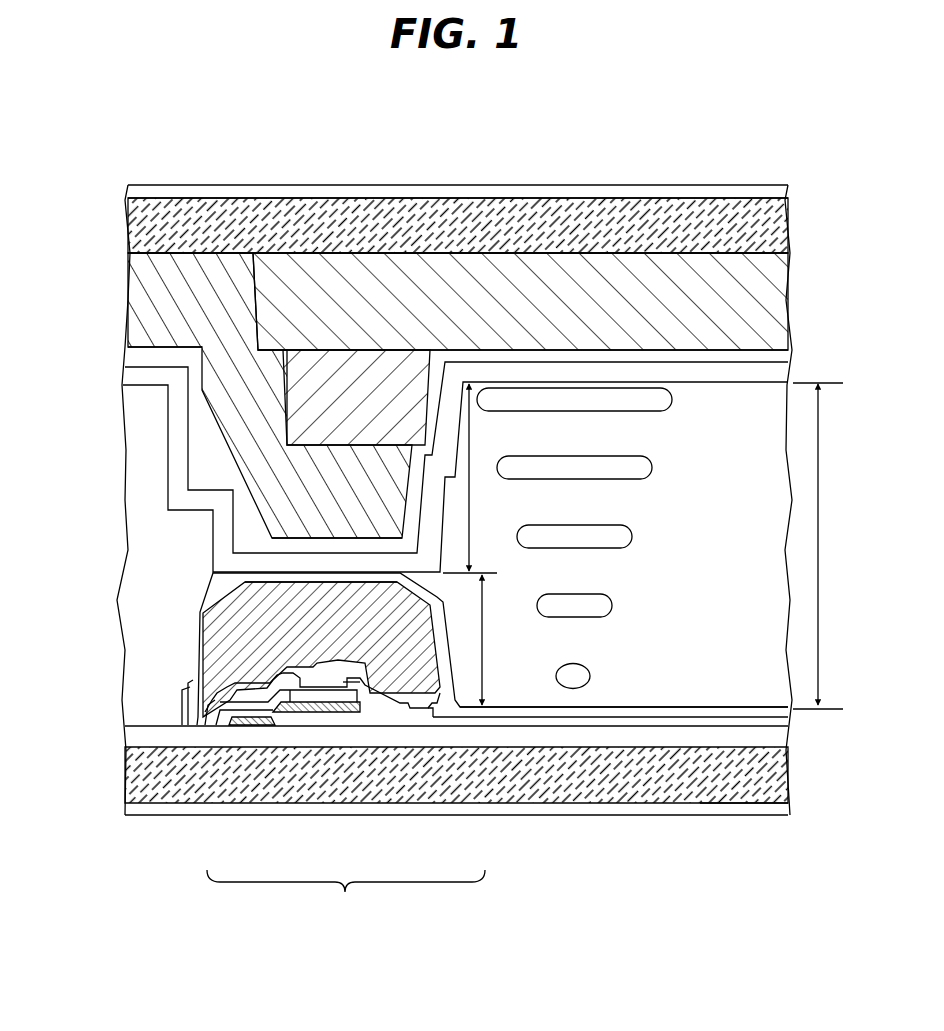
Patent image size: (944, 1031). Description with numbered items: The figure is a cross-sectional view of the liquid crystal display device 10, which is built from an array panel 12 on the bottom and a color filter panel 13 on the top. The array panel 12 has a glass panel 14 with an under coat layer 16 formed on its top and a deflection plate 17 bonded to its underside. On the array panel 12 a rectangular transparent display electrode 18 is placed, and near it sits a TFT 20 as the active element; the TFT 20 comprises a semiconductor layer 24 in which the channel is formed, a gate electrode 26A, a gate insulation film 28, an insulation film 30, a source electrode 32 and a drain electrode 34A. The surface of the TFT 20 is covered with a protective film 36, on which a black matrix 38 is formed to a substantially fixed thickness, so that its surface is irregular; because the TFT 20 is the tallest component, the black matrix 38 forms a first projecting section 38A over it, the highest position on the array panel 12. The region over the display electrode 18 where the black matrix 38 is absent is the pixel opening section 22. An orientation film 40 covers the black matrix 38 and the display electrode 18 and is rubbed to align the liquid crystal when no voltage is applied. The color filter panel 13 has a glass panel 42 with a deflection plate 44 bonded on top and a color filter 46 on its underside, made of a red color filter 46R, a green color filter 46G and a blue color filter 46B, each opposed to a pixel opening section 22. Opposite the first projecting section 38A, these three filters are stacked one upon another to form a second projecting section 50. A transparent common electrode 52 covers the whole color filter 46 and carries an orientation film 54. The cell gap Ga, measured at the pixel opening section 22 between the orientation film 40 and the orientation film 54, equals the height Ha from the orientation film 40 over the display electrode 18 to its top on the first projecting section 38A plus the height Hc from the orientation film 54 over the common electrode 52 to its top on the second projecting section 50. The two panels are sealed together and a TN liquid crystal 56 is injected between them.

The liquid crystal display device 10 is at (597, 166).
The deflection plate 44 is at (780, 190).
The glass panel 42 is at (790, 218).
The color filter 46 is at (778, 272).
The color filter panel 13 is at (792, 306).
The red color filter 46R is at (780, 335).
The blue color filter 46B is at (145, 298).
The green color filter 46G is at (410, 425).
The common electrode 52 is at (135, 355).
The orientation film 54 is at (135, 378).
The second projecting section 50 is at (268, 540).
The first projecting section 38A is at (278, 578).
The orientation film 40 is at (215, 603).
The black matrix 38 is at (220, 657).
The display electrode 18 is at (770, 719).
The under coat layer 16 is at (775, 745).
The array panel 12 is at (792, 785).
The glass panel 14 is at (790, 797).
The deflection plate 17 is at (767, 807).
The TN liquid crystal 56 is at (672, 465).
The pixel opening section 22 is at (655, 690).
The height Hc is at (470, 505).
The height Ha is at (482, 640).
The cell gap Ga is at (822, 560).
The semiconductor layer 24 is at (258, 727).
The gate electrode 26A is at (280, 727).
The insulation film 30 is at (320, 693).
The gate insulation film 28 is at (420, 712).
The source electrode 32 is at (445, 705).
The drain electrode 34A is at (222, 727).
The protective film 36 is at (207, 727).
The TFT 20 is at (346, 896).